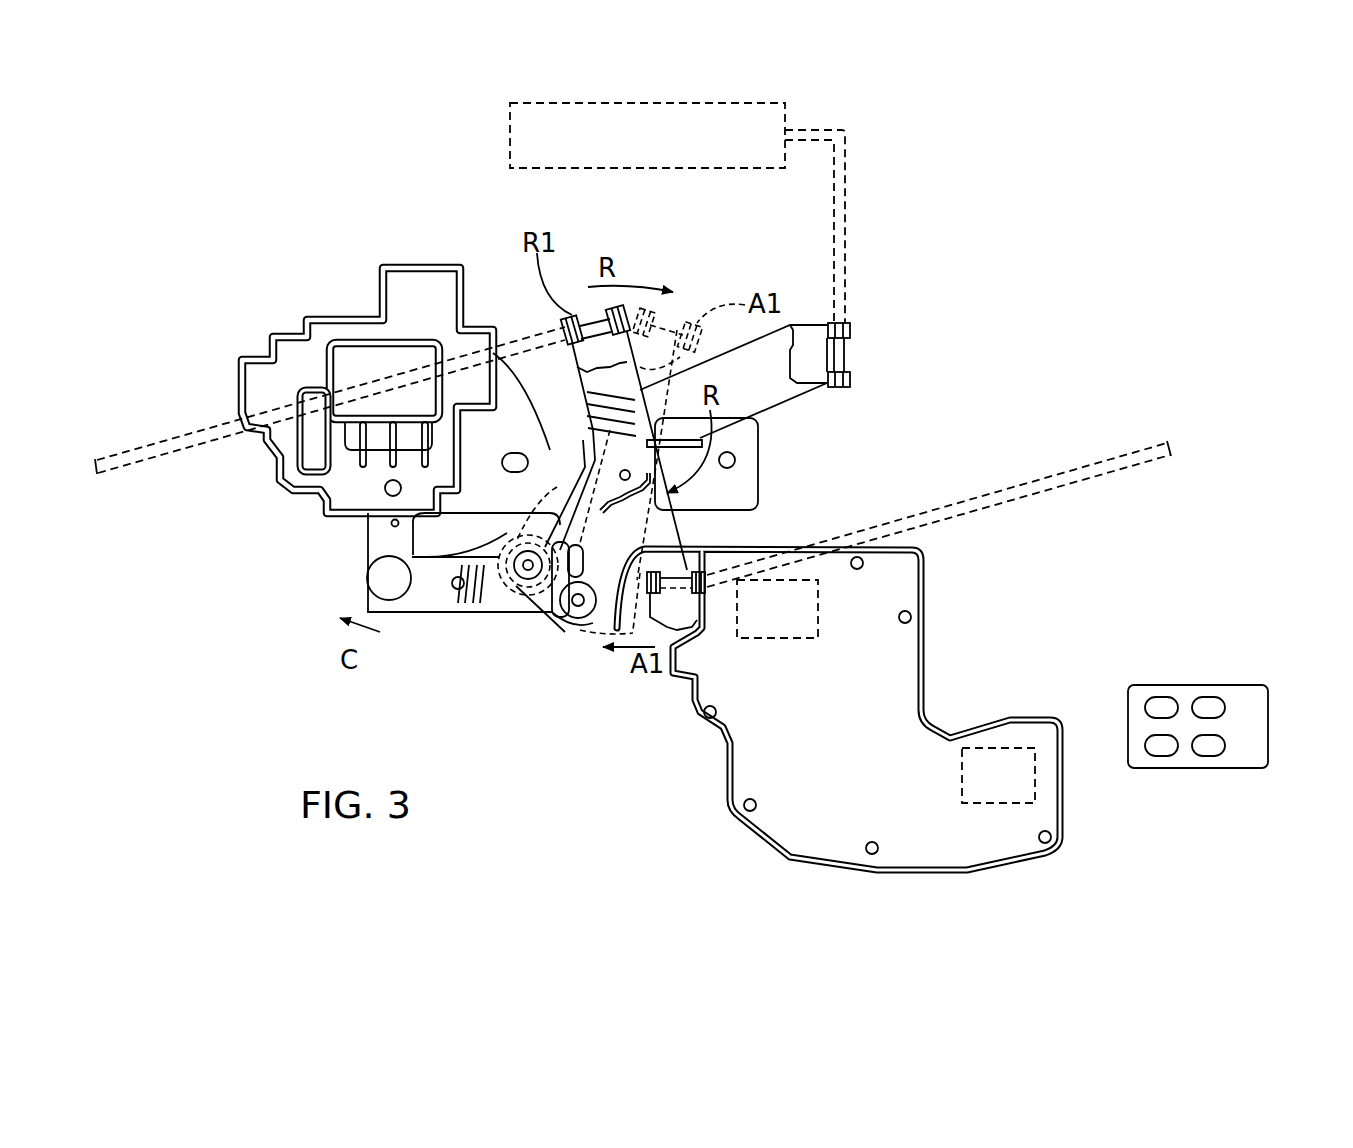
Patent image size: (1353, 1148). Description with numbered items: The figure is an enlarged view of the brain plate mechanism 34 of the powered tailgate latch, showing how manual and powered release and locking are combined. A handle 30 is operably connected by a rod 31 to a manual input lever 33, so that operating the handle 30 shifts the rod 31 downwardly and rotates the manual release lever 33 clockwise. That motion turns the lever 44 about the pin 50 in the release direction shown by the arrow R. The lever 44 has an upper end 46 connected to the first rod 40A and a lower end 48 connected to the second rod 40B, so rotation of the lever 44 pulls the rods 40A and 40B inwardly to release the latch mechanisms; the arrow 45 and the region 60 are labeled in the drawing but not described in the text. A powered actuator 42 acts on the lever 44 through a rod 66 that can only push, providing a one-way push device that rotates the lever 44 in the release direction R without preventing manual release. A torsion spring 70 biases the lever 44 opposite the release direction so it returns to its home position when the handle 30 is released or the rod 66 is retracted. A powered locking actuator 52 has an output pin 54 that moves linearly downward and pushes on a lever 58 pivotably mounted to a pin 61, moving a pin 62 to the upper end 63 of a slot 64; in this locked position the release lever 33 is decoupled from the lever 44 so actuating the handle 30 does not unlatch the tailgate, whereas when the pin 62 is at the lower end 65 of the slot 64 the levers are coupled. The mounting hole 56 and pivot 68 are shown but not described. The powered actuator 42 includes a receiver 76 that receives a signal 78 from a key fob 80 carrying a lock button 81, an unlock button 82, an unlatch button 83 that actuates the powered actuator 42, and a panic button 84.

The handle 30 is at (785, 115).
The rod 31 is at (845, 205).
The manual input lever 33 is at (778, 390).
The brain plate mechanism 34 is at (652, 258).
The first rod 40A is at (155, 446).
The second rod 40B is at (973, 507).
The powered actuator 42 is at (907, 543).
The lever 44 is at (655, 507).
The direction 45 is at (437, 678).
The upper end 46 is at (627, 313).
The lower end 48 is at (697, 643).
The pin 50 is at (623, 473).
The powered locking actuator 52 is at (345, 314).
The output pin 54 is at (398, 613).
The mounting hole 56 is at (387, 492).
The lever 58 is at (447, 600).
The pivot boss 60 is at (367, 580).
The pin 61 is at (462, 585).
The pin 62 is at (578, 603).
The upper end 63 is at (573, 550).
The slot 64 is at (587, 557).
The lower end 65 is at (567, 630).
The rod 66 is at (718, 613).
The pivot pin 68 is at (540, 583).
The torsion spring 70 is at (603, 506).
The receiver 76 is at (1020, 787).
The signal 78 is at (1075, 757).
The key fob 80 is at (1267, 682).
The lock button 81 is at (1162, 707).
The unlock button 82 is at (1208, 703).
The unlatch button 83 is at (1167, 753).
The panic button 84 is at (1213, 750).